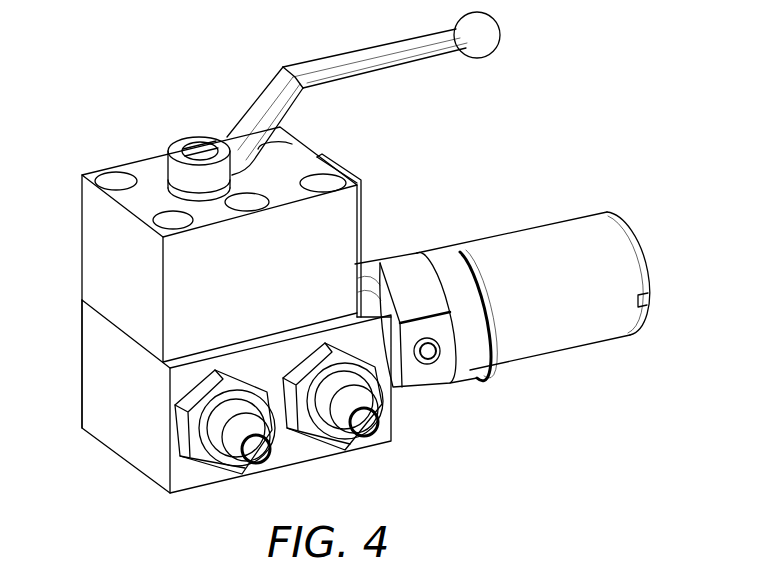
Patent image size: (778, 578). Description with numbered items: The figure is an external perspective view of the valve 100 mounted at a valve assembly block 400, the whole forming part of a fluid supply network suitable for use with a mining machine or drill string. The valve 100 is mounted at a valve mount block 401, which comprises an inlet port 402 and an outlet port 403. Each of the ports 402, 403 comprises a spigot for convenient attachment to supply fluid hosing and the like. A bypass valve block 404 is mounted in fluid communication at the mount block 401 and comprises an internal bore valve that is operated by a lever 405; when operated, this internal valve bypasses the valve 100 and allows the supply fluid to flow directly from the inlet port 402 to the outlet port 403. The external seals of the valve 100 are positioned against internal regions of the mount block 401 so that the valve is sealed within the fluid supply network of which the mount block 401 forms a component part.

The valve assembly block 400 is at (92, 80).
The valve mount block 401 is at (88, 373).
The inlet port 402 is at (258, 453).
The outlet port 403 is at (366, 428).
The bypass valve block 404 is at (88, 243).
The lever 405 is at (373, 57).
The valve 100 is at (565, 202).